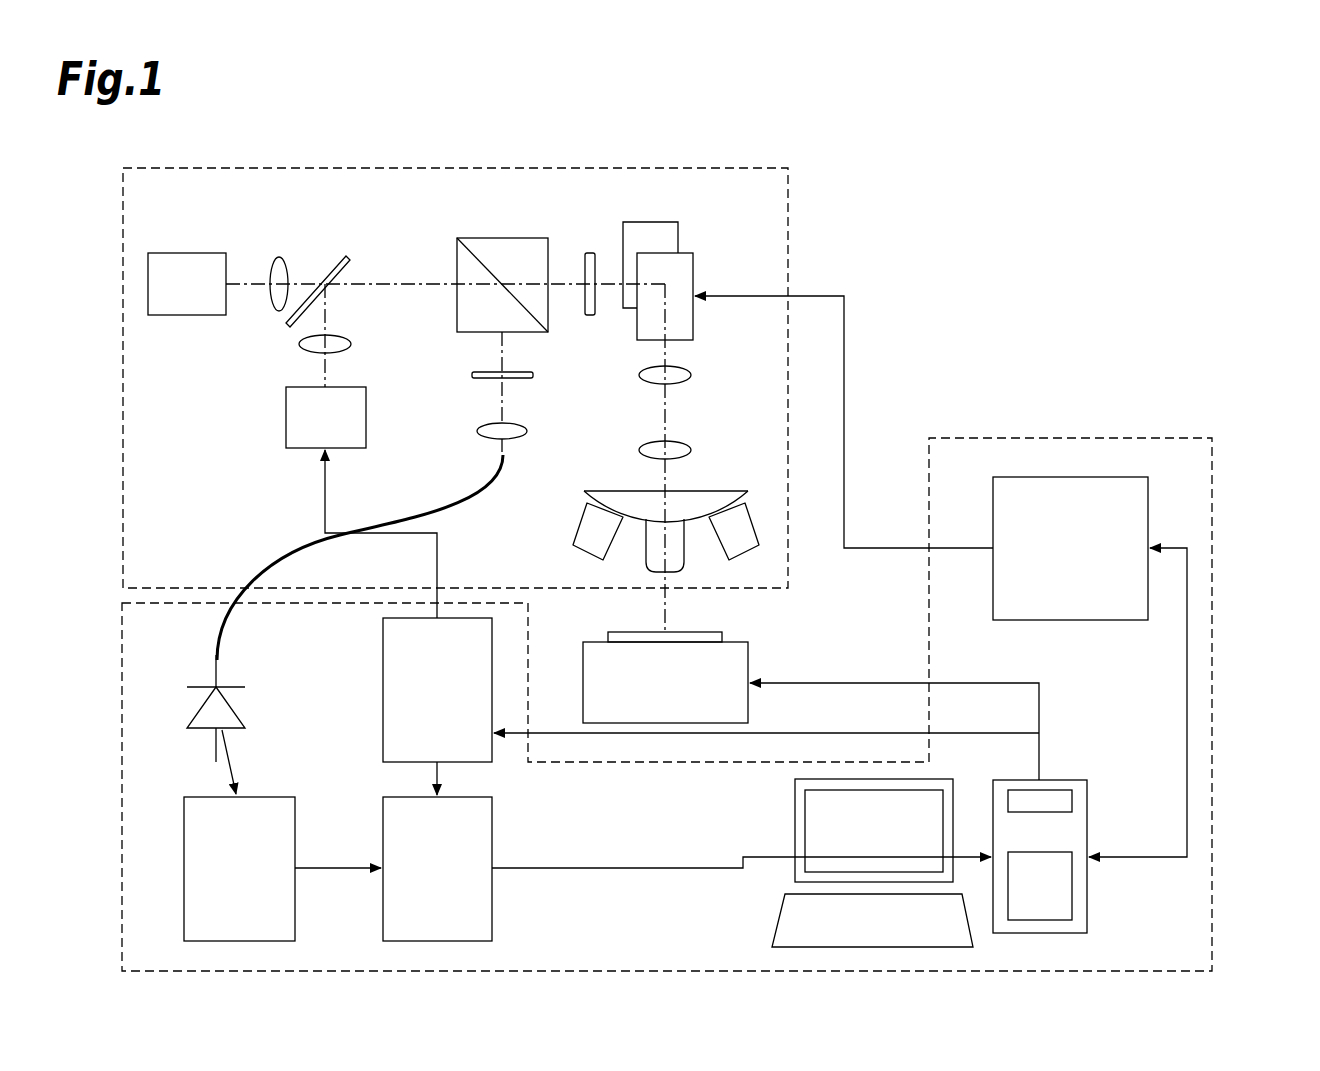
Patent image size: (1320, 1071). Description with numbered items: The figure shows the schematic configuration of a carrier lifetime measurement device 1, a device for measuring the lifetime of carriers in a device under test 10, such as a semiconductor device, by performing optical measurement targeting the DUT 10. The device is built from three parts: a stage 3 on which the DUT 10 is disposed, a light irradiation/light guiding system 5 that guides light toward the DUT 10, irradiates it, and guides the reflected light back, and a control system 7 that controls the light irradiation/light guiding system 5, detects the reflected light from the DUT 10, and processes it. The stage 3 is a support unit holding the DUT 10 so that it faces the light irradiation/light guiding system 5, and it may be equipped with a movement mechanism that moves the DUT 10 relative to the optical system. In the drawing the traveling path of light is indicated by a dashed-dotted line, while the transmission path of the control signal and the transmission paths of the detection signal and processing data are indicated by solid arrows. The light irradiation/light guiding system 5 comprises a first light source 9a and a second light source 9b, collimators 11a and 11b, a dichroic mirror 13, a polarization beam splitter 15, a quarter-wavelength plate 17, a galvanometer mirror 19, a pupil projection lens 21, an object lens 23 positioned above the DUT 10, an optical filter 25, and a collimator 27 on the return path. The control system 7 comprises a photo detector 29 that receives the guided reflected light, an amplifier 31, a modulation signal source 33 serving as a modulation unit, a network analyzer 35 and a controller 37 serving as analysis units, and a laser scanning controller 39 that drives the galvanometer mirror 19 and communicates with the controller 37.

The carrier lifetime measurement device 1 is at (1003, 173).
The stage 3 is at (748, 655).
The light irradiation/light guiding system 5 is at (428, 168).
The control system 7 is at (1083, 438).
The light source 9a is at (187, 253).
The light source 9b is at (286, 415).
The device under test 10 is at (722, 637).
The collimator 11a is at (277, 257).
The collimator 11b is at (299, 343).
The dichroic mirror 13 is at (343, 250).
The polarization beam splitter 15 is at (500, 238).
The quarter-wavelength plate 17 is at (590, 253).
The galvanometer mirror 19 is at (678, 233).
The pupil projection lens 21 is at (691, 375).
The object lens 23 is at (684, 560).
The optical filter 25 is at (533, 375).
The collimator 27 is at (527, 431).
The photo detector 29 is at (233, 706).
The amplifier 31 is at (295, 820).
The modulation signal source 33 is at (383, 640).
The network analyzer 35 is at (492, 820).
The controller 37 is at (1087, 803).
The laser scanning controller 39 is at (1148, 497).